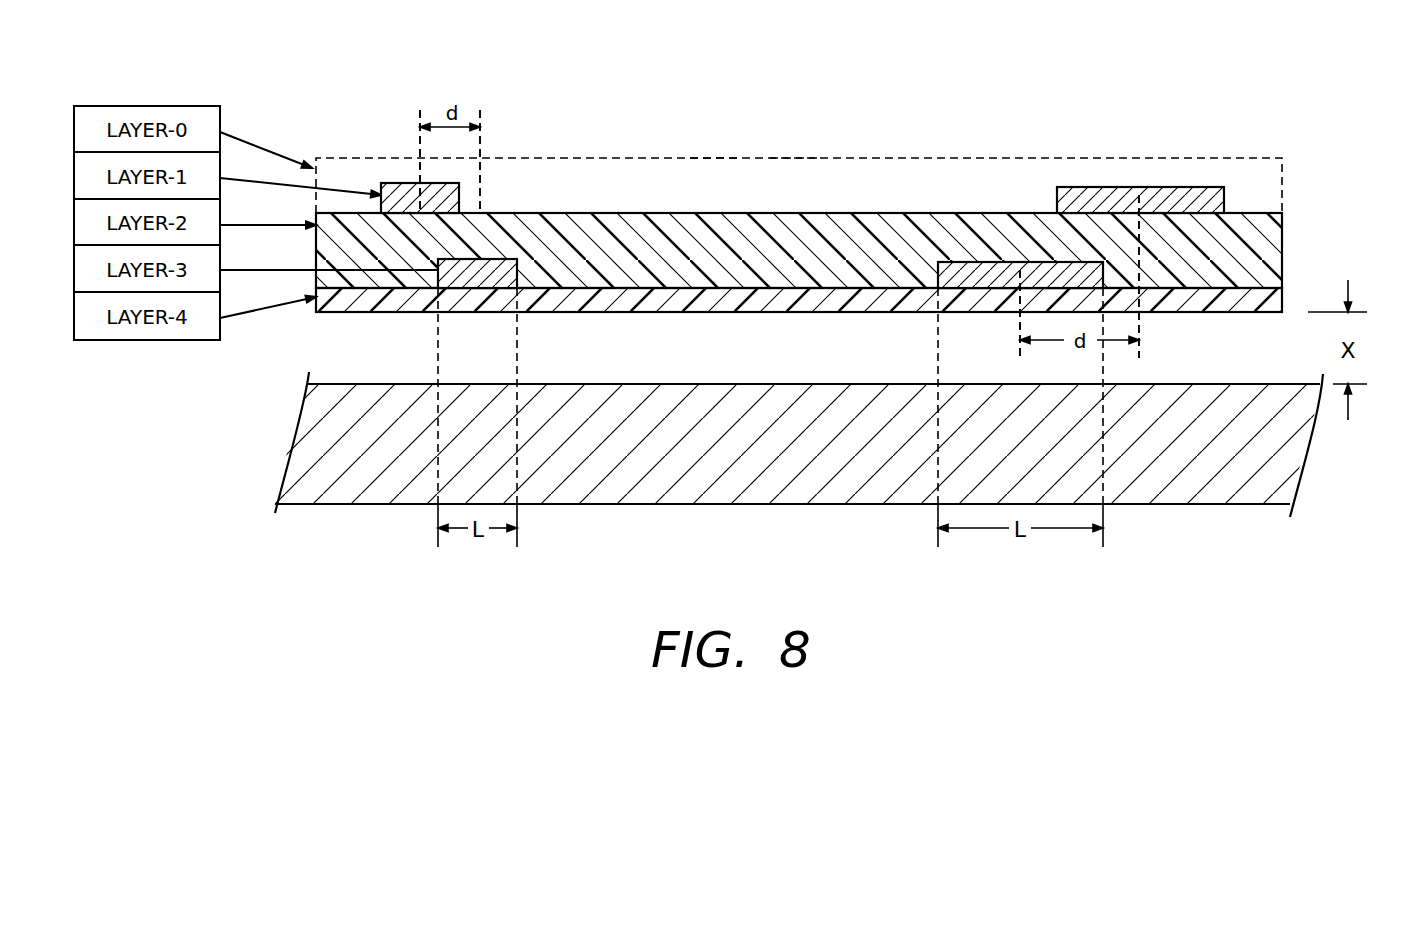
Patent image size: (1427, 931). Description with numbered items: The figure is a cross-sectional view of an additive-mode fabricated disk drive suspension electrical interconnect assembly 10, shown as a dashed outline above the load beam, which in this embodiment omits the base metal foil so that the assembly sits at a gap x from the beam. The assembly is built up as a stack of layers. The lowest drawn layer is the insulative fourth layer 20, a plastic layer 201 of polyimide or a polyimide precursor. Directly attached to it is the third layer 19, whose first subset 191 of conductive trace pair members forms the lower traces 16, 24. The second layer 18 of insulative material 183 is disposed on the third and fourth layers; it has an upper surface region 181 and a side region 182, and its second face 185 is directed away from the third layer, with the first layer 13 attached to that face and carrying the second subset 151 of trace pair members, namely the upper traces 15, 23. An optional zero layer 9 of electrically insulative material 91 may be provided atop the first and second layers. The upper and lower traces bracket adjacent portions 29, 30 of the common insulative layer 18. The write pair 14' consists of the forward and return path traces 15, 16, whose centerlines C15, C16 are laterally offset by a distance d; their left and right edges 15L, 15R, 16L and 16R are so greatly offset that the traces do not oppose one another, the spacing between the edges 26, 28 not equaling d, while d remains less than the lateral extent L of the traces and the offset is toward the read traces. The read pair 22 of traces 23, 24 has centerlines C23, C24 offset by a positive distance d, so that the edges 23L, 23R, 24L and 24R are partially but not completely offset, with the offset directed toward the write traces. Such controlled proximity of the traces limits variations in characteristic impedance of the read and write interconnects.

The zero layer 9 is at (713, 170).
The electrical interconnect assembly 10 is at (1292, 168).
The first layer 13 is at (1240, 193).
The write pair 14' is at (540, 159).
The write forward path conductive trace 15 is at (398, 183).
The left edge of trace 15 15L is at (380, 188).
The right edge of trace 15 15R is at (462, 197).
The write return path conductive trace 16 is at (458, 275).
The left edge of trace 16 16L is at (432, 270).
The right edge of trace 16 16R is at (520, 268).
The second layer 18 is at (807, 213).
The third layer 19 is at (960, 237).
The fourth layer 20 is at (793, 297).
The read pair 22 is at (1030, 180).
The read forward path conductive trace 23 is at (1083, 187).
The left edge of trace 23 23L is at (1057, 193).
The right edge of trace 23 23R is at (1225, 203).
The read return path conductive trace 24 is at (963, 278).
The left edge of trace 24 24L is at (938, 272).
The right edge of trace 24 24R is at (1105, 277).
The spaced edge of trace 15 26 is at (381, 192).
The spaced edge of trace 16 28 is at (445, 300).
The insulative layer portion 29 is at (628, 227).
The insulative layer portion 30 is at (1167, 227).
The electrically insulative material 91 is at (792, 172).
The second subset of conductive trace pair members 151 is at (440, 177).
The top surface of layer 18 181 is at (440, 232).
The side surface of layer 18 182 is at (1198, 228).
The insulative material 183 is at (692, 270).
The second face 185 is at (990, 213).
The first subset of conductive trace pair members 191 is at (470, 290).
The plastic layer 201 is at (1237, 303).
The centerline of trace 15 C15 is at (420, 110).
The centerline of trace 16 C16 is at (480, 110).
The centerline of trace 23 C23 is at (1139, 350).
The centerline of trace 24 C24 is at (1020, 348).